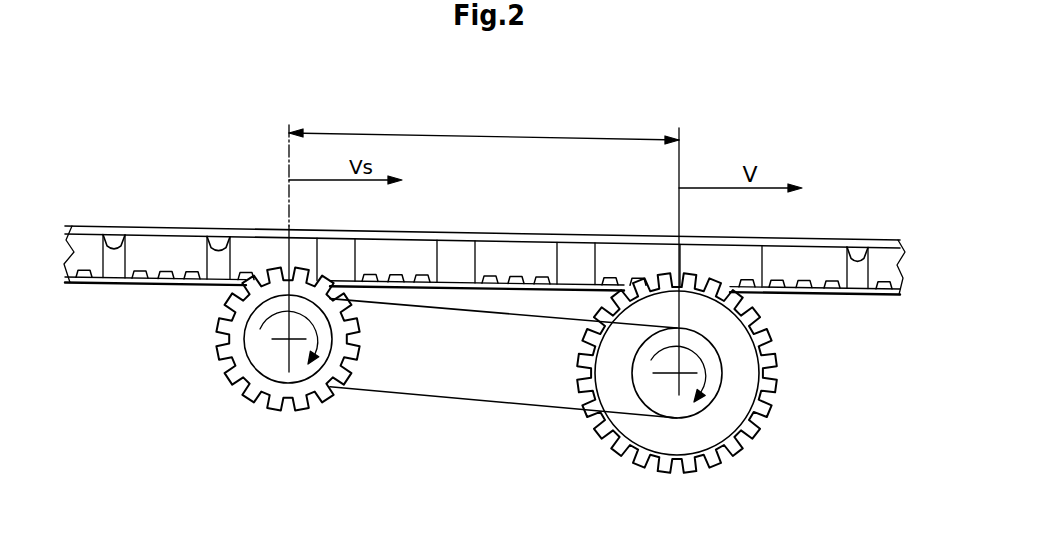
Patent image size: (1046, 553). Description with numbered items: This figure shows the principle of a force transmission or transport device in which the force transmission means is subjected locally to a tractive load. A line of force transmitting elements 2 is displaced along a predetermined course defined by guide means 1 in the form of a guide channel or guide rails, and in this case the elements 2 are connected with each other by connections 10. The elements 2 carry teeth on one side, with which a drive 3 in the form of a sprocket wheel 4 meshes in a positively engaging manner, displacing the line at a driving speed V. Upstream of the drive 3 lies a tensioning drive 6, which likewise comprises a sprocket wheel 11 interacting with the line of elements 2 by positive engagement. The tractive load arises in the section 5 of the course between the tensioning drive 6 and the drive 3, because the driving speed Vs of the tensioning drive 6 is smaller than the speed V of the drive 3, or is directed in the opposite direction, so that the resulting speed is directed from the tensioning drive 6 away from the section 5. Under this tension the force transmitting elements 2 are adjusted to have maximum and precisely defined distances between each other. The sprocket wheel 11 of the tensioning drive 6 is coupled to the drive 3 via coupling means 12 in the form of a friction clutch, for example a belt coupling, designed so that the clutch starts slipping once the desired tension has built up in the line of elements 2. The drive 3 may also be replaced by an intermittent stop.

The guide means 1 is at (455, 287).
The force transmitting elements 2 is at (160, 247).
The drive 3 is at (708, 376).
The sprocket wheel 4 is at (677, 385).
The section 5 is at (484, 251).
The tensioning drive 6 is at (251, 349).
The connections 10 is at (217, 237).
The sprocket wheel 11 is at (227, 375).
The coupling means 12 is at (435, 397).